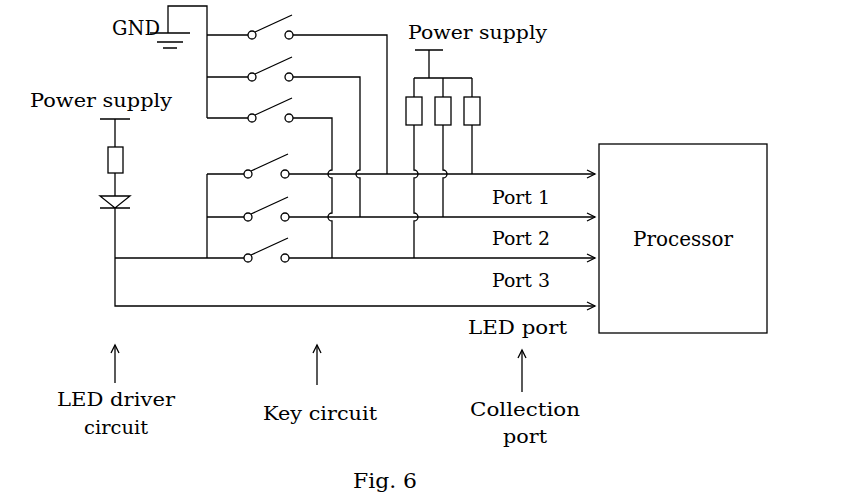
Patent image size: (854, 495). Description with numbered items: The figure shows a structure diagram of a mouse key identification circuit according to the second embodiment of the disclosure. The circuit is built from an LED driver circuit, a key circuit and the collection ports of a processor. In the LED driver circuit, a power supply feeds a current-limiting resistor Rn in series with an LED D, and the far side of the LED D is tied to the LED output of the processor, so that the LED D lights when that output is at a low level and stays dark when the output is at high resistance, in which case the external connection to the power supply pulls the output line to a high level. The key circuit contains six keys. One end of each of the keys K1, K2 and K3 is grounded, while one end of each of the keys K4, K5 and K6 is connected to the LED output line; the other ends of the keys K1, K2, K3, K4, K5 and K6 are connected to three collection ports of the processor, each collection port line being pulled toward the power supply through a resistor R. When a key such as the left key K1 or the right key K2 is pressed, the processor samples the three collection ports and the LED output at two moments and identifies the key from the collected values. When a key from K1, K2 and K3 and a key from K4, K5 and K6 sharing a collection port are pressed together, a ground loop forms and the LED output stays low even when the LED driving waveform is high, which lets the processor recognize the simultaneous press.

The key K1 is at (297, 90).
The key K2 is at (283, 132).
The key K3 is at (269, 173).
The key K4 is at (401, 161).
The key K5 is at (401, 204).
The key K6 is at (355, 245).
The current-limiting resistor Rn is at (97, 160).
The LED D is at (101, 207).
The resistor R is at (436, 177).